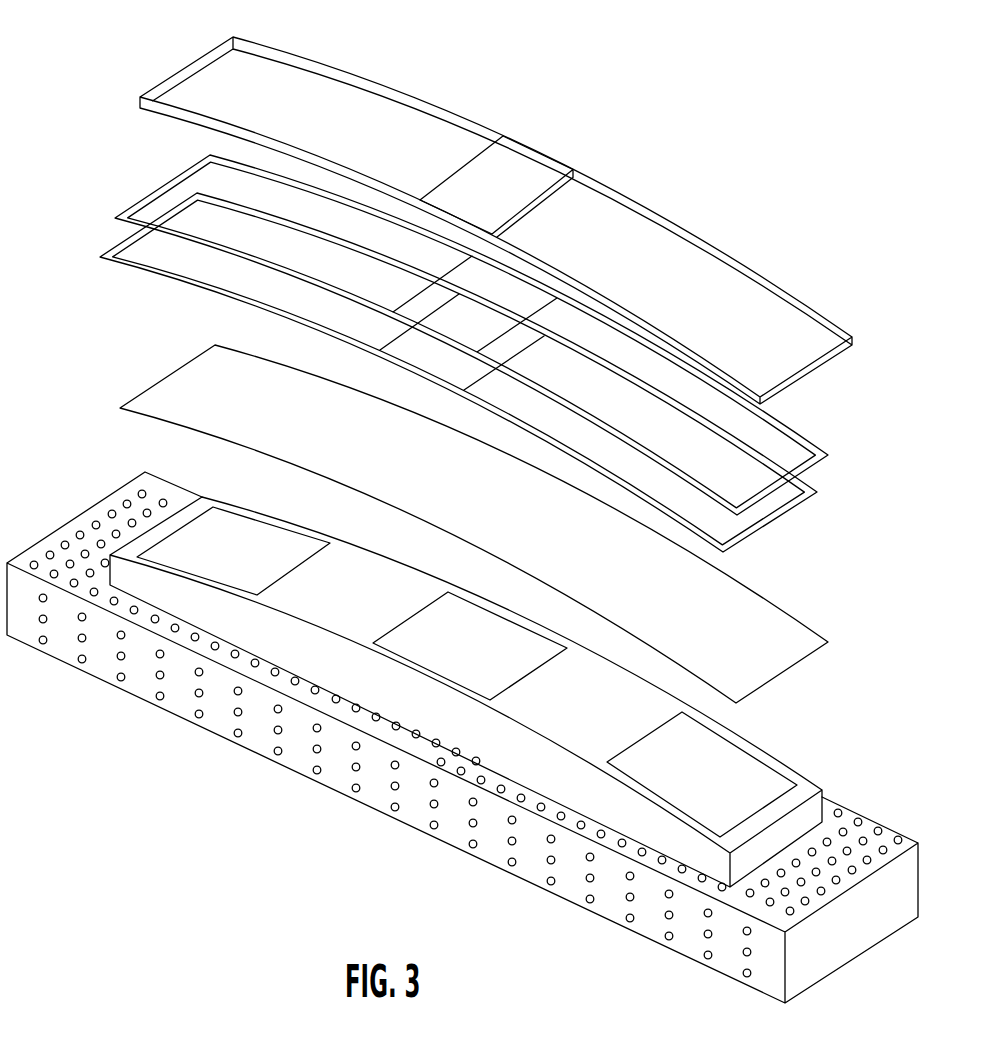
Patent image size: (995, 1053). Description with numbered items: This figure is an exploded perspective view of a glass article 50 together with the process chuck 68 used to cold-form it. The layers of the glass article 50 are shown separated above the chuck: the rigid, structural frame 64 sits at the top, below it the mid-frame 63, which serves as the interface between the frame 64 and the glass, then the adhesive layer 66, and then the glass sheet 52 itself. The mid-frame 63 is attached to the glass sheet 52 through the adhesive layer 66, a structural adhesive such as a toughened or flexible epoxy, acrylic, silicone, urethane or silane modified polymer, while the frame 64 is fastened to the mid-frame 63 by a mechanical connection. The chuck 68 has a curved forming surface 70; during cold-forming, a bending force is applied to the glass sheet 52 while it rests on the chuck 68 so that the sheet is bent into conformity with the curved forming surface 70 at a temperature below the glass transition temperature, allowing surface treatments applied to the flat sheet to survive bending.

The glass article 50 is at (835, 28).
The glass sheet 52 is at (165, 400).
The mid-frame 63 is at (168, 182).
The frame 64 is at (527, 164).
The adhesive layer 66 is at (153, 273).
The chuck 68 is at (285, 642).
The curved forming surface 70 is at (597, 700).